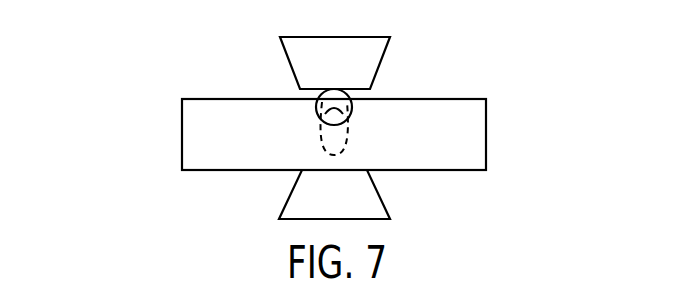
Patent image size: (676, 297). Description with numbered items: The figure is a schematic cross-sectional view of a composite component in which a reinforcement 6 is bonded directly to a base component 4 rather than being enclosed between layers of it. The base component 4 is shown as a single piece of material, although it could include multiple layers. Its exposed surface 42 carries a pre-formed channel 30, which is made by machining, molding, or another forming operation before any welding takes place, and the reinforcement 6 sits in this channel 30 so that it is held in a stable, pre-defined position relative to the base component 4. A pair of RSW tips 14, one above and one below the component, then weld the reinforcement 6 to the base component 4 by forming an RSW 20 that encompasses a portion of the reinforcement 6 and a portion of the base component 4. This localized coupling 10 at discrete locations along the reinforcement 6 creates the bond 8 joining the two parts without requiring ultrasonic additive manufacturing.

The base component 4 is at (470, 129).
The exposed surface 42 is at (212, 99).
The RSW tips 14 is at (307, 57).
The pre-formed channel 30 is at (362, 119).
The reinforcement 6 is at (318, 113).
The bond 8 is at (200, 129).
The localized coupling 10 is at (200, 129).
The RSW 20 is at (340, 132).